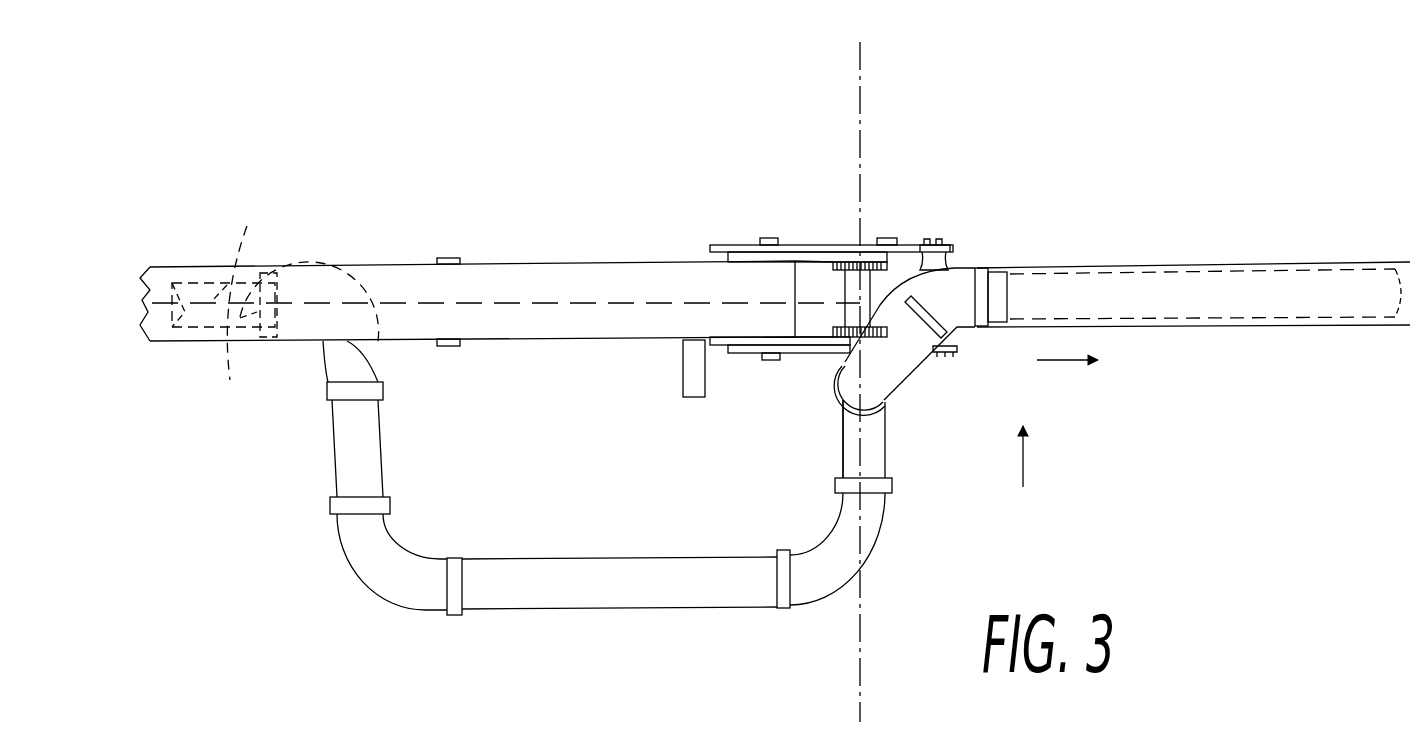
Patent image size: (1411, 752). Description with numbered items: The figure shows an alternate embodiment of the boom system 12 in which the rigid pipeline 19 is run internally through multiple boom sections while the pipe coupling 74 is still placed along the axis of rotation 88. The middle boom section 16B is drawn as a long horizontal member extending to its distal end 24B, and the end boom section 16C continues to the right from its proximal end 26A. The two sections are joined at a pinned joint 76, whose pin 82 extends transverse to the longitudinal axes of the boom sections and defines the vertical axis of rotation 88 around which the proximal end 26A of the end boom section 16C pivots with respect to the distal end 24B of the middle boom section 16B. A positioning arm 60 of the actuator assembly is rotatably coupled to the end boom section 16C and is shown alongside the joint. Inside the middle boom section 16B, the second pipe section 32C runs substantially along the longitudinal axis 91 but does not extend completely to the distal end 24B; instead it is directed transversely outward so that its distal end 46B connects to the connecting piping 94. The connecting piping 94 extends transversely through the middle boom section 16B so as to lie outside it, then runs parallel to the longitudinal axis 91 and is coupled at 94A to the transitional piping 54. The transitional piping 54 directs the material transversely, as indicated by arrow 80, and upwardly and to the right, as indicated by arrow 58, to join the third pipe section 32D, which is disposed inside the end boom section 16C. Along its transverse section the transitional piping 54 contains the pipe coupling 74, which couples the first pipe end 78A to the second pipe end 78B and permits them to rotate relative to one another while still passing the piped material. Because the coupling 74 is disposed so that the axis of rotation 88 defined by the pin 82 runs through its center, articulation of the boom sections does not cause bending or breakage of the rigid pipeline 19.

The boom system 12 is at (1016, 142).
The middle boom section 16B is at (541, 258).
The end boom section 16C is at (1114, 258).
The pipeline 19 is at (523, 620).
The distal end 24B is at (765, 290).
The proximal end 26A is at (1020, 290).
The second pipe section 32C is at (240, 248).
The third pipe section 32D is at (1236, 298).
The distal end 46B is at (302, 318).
The transitional piping 54 is at (905, 366).
The arrow 58 is at (1058, 360).
The positioning arm 60 is at (738, 242).
The pipe coupling 74 is at (835, 485).
The pinned joint 76 is at (858, 294).
The first pipe end 78A is at (848, 512).
The second pipe end 78B is at (848, 460).
The arrow 80 is at (1023, 460).
The pin 82 is at (850, 312).
The axis of rotation 88 is at (861, 58).
The longitudinal axis 91 is at (415, 303).
The connecting piping 94 is at (368, 363).
The coupling point 94A is at (777, 578).